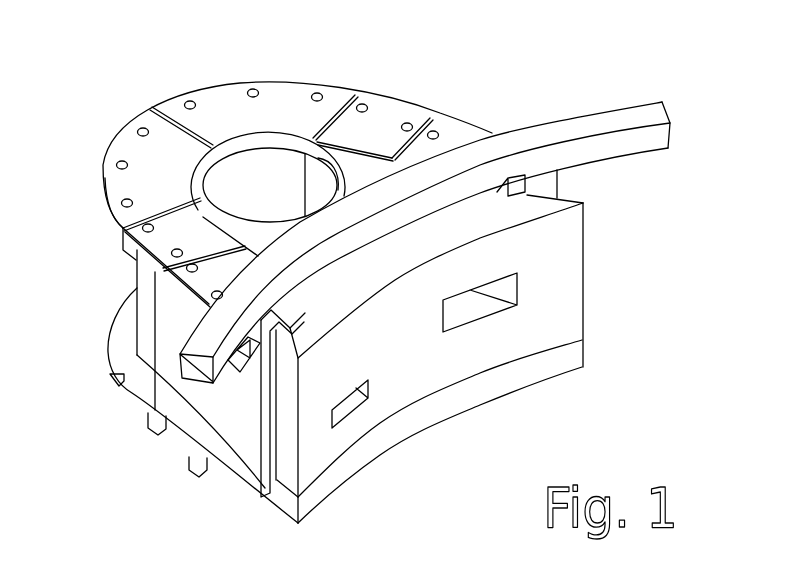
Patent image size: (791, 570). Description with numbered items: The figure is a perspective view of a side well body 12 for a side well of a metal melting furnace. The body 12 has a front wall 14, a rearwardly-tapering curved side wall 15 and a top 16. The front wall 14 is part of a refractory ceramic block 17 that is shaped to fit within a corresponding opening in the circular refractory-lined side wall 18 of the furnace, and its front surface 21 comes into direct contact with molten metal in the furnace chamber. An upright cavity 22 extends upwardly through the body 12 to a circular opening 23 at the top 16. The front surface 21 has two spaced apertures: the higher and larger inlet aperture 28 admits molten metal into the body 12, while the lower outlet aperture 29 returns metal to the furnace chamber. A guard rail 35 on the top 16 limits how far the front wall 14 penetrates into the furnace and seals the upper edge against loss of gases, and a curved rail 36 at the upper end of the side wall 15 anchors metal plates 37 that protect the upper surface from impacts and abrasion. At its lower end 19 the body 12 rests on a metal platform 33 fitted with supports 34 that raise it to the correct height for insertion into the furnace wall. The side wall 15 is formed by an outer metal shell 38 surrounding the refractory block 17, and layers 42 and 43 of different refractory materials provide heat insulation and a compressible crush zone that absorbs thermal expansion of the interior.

The body 12 is at (493, 101).
The front wall 14 is at (563, 252).
The side wall 15 is at (207, 417).
The top 16 is at (283, 100).
The refractory ceramic block 17 is at (392, 276).
The side wall of furnace 18 is at (447, 564).
The lower end 19 is at (285, 510).
The front surface 21 is at (313, 463).
The upright cavity 22 is at (282, 199).
The circular opening 23 is at (253, 143).
The inlet aperture 28 is at (483, 317).
The outlet aperture 29 is at (374, 382).
The metal platform 33 is at (133, 387).
The supports 34 is at (143, 427).
The guard rail 35 is at (578, 122).
The curved rail 36 is at (110, 233).
The metal plates 37 is at (128, 145).
The outer metal shell 38 is at (253, 467).
The layer 42 is at (523, 185).
The layer 43 is at (543, 197).